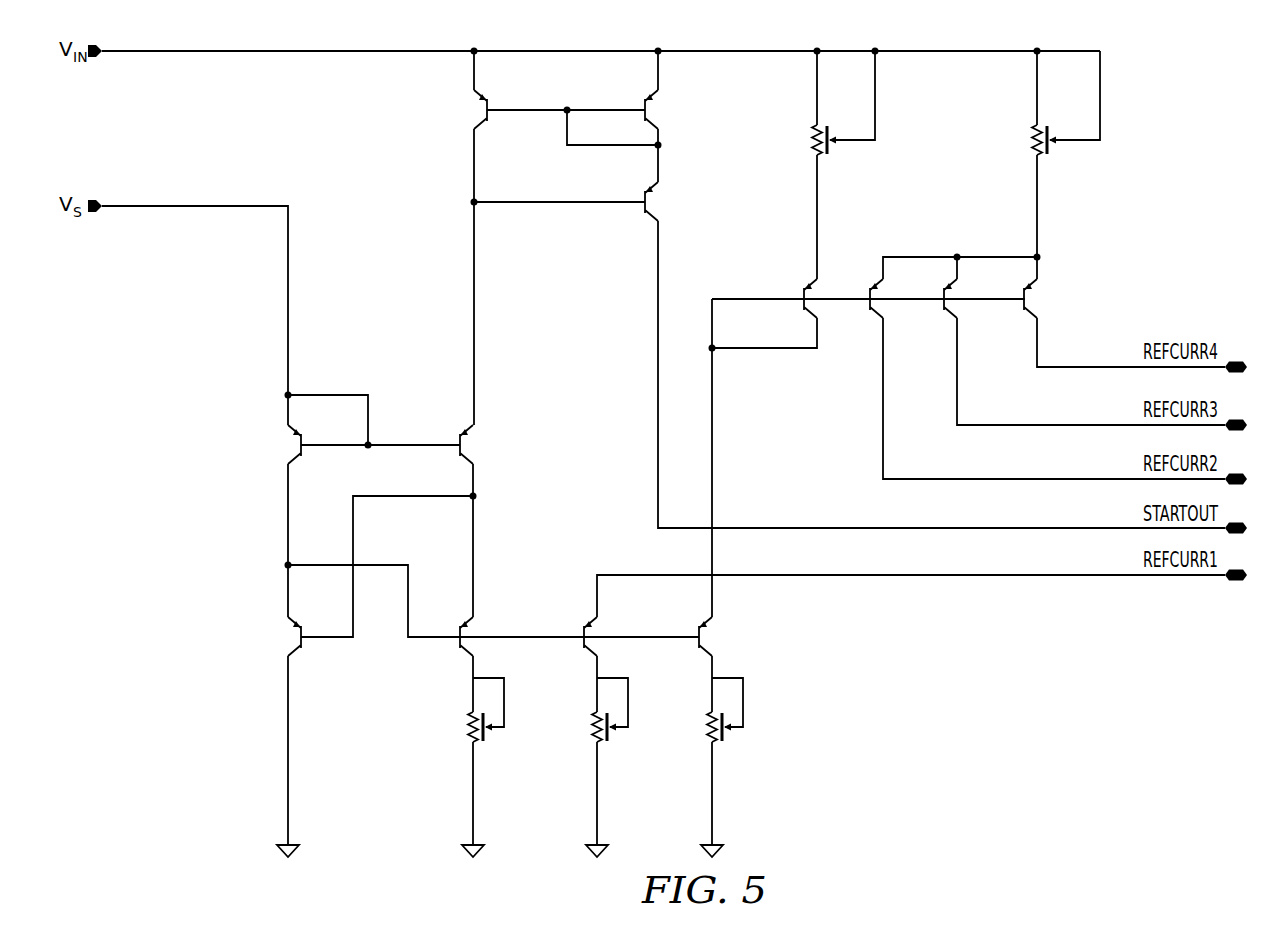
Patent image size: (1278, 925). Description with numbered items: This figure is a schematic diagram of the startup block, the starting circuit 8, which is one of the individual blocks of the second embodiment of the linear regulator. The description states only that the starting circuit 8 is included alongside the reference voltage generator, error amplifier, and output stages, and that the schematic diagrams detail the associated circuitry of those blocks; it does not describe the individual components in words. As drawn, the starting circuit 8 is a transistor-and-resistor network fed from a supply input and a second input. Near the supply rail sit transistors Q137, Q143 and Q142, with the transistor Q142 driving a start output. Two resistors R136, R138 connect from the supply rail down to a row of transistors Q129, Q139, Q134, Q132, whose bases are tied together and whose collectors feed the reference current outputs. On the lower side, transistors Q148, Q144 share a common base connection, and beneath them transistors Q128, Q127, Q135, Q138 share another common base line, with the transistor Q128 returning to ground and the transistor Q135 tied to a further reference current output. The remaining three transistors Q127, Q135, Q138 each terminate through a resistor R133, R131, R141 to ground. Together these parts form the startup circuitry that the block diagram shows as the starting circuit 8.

The starting circuit 8 is at (446, 41).
The transistor Q137 is at (558, 238).
The transistor Q143 is at (613, 116).
The transistor Q142 is at (849, 345).
The resistor R136 is at (821, 103).
The resistor R138 is at (1043, 103).
The transistor Q129 is at (867, 386).
The transistor Q139 is at (1031, 367).
The transistor Q134 is at (1067, 341).
The transistor Q132 is at (1108, 261).
The transistor Q148 is at (373, 515).
The transistor Q144 is at (389, 521).
The transistor Q128 is at (306, 723).
The transistor Q127 is at (562, 651).
The transistor Q135 is at (888, 643).
The transistor Q138 is at (688, 651).
The resistor R133 is at (462, 767).
The resistor R131 is at (588, 767).
The resistor R141 is at (702, 767).